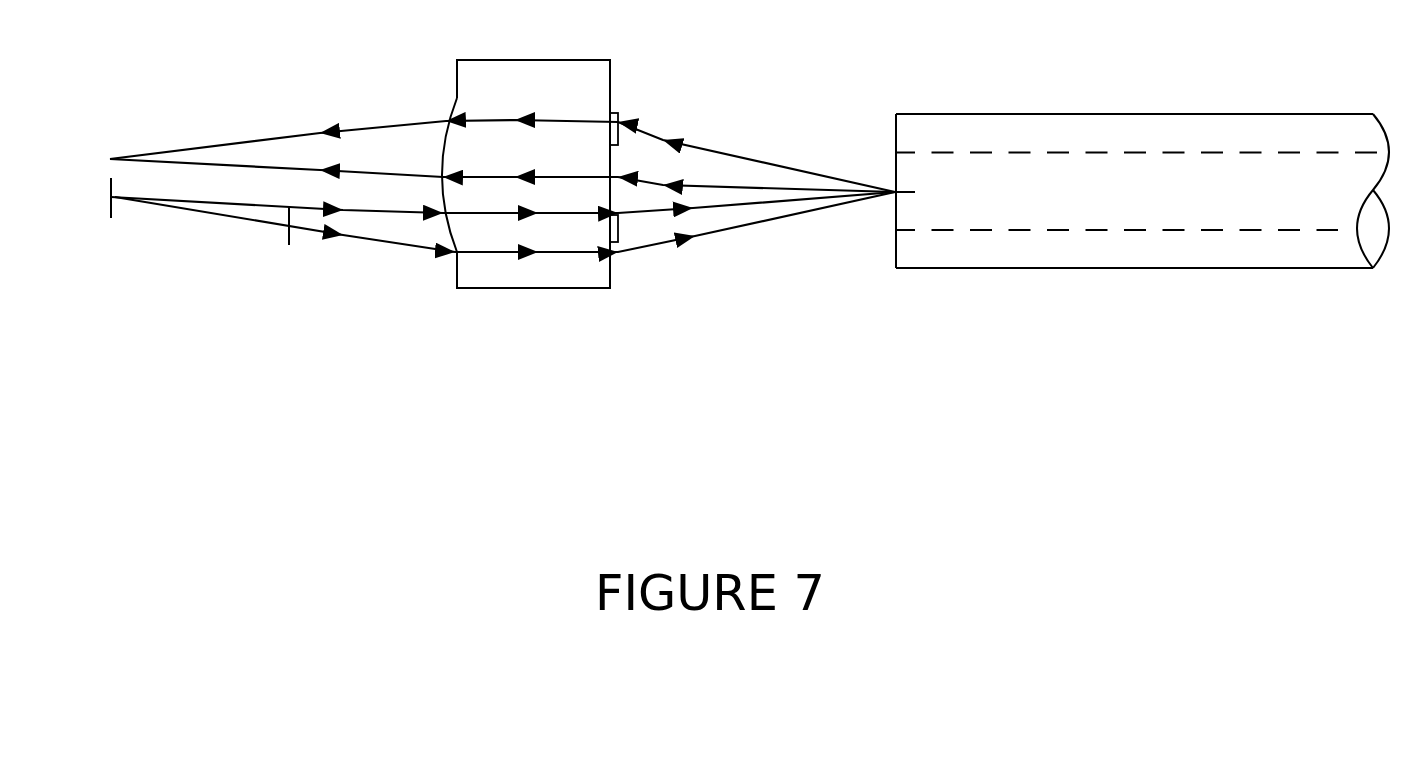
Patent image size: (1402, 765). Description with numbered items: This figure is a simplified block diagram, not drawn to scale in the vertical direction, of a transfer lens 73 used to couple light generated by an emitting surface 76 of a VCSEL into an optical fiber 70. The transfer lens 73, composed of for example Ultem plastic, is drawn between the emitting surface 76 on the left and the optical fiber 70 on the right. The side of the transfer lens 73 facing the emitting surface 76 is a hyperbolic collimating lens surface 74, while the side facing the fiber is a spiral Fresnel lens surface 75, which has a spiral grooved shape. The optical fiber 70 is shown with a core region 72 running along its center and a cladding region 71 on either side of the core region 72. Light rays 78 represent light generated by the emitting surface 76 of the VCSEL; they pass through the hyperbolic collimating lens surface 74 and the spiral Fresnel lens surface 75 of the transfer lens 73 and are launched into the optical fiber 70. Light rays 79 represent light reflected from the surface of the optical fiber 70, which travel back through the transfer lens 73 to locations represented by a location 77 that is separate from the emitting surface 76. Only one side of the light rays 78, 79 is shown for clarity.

The optical fiber 70 is at (1010, 270).
The cladding region 71 is at (1090, 144).
The core region 72 is at (1162, 204).
The transfer lens 73 is at (560, 290).
The hyperbolic collimating lens surface 74 is at (453, 103).
The spiral Fresnel lens surface 75 is at (623, 112).
The emitting surface 76 is at (111, 228).
The location 77 is at (107, 153).
The light rays 78 is at (272, 228).
The light rays 79 is at (745, 185).